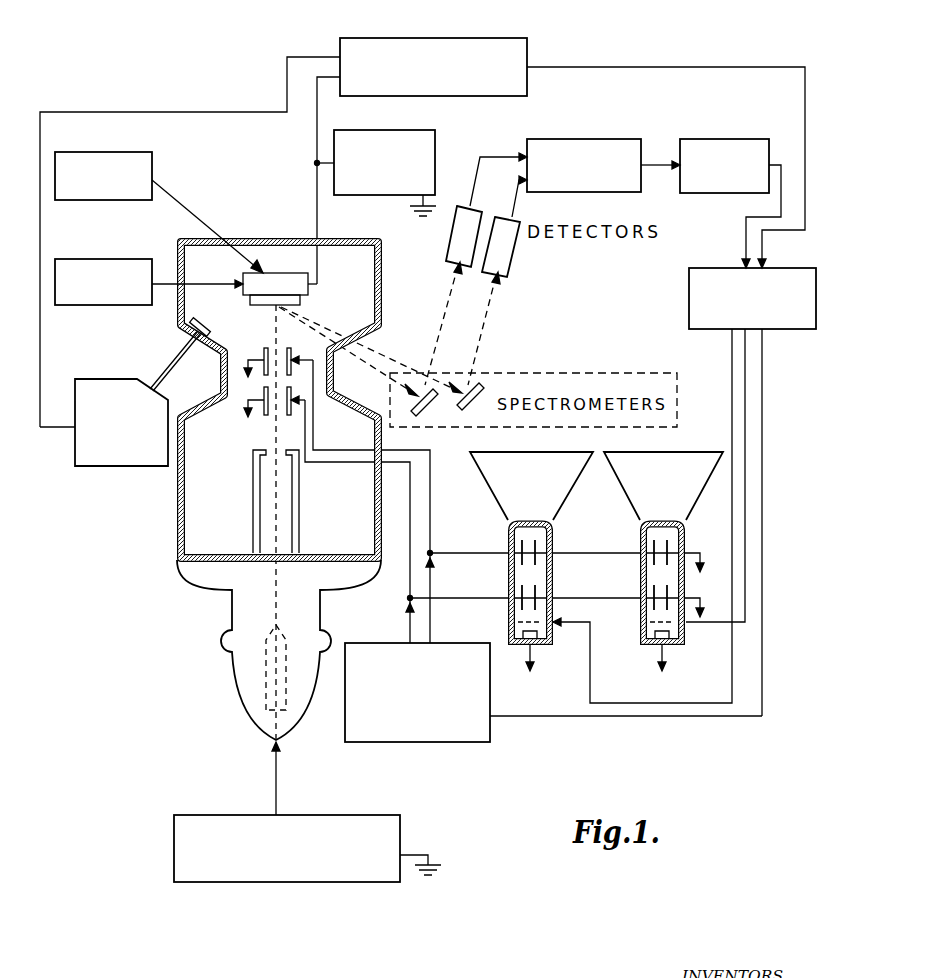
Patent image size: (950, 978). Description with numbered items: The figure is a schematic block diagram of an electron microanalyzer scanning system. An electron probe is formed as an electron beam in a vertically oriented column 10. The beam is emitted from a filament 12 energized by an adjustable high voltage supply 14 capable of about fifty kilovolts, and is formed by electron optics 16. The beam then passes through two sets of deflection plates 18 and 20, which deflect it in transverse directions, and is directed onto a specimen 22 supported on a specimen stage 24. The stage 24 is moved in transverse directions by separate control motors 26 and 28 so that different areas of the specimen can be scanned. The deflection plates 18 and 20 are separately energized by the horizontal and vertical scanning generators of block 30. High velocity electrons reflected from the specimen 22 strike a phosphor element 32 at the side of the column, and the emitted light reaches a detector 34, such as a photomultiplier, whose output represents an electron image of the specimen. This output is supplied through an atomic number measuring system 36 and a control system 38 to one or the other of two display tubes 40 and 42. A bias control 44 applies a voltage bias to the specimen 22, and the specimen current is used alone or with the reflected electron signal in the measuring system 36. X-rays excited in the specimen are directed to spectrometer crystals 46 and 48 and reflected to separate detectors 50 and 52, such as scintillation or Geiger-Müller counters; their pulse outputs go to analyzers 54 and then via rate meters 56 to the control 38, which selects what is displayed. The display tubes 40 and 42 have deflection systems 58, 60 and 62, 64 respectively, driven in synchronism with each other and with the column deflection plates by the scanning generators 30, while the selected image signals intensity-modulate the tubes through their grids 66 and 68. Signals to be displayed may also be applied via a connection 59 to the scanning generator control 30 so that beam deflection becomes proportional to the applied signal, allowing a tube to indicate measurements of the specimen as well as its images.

The column 10 is at (168, 580).
The filament 12 is at (290, 626).
The high voltage supply 14 is at (400, 830).
The electron optics 16 is at (300, 509).
The deflection plates 18 is at (262, 417).
The deflection plates 20 is at (264, 348).
The specimen 22 is at (300, 302).
The specimen stage 24 is at (294, 273).
The control motor 26 is at (97, 259).
The control motor 28 is at (153, 176).
The horizontal and vertical scanning generators 30 is at (455, 742).
The phosphor element 32 is at (190, 347).
The detector 34 is at (98, 466).
The atomic number measuring system 36 is at (462, 38).
The control system 38 is at (689, 298).
The display tube 40 is at (530, 562).
The display tube 42 is at (660, 561).
The bias control 44 is at (436, 143).
The spectrometer crystal 46 is at (429, 408).
The spectrometer crystal 48 is at (481, 386).
The detector 50 is at (448, 258).
The detector 52 is at (507, 263).
The analyzers 54 is at (593, 192).
The rate meters 56 is at (712, 193).
The deflection system 58 is at (549, 591).
The connection 59 is at (609, 716).
The deflection system 60 is at (549, 546).
The deflection system 62 is at (686, 593).
The deflection system 64 is at (686, 544).
The grid 66 is at (512, 620).
The grid 68 is at (652, 622).